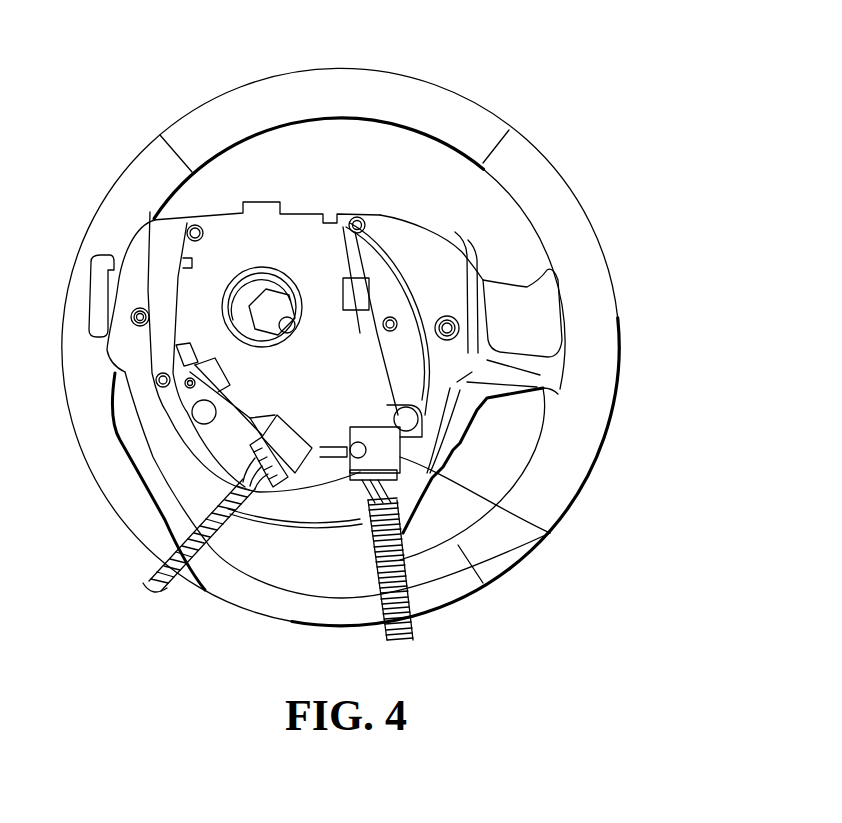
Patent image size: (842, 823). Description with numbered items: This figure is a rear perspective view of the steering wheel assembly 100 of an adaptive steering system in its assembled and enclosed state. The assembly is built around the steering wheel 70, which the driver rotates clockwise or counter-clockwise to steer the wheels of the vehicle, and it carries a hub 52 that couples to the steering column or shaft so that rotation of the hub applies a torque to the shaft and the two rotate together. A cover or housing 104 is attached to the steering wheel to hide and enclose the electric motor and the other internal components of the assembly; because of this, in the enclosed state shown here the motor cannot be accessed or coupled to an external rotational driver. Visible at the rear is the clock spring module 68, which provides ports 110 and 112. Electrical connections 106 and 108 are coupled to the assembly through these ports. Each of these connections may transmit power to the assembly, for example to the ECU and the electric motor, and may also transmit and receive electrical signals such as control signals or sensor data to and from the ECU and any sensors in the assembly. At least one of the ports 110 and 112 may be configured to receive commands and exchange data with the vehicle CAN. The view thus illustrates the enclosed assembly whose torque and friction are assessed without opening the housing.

The steering wheel assembly 100 is at (442, 55).
The steering wheel 70 is at (588, 300).
The cover or housing 104 is at (433, 255).
The port 112 is at (548, 533).
The clock spring module 68 is at (220, 250).
The hub 52 is at (278, 300).
The port 110 is at (262, 435).
The electrical connection 106 is at (250, 445).
The electrical connection 108 is at (360, 480).